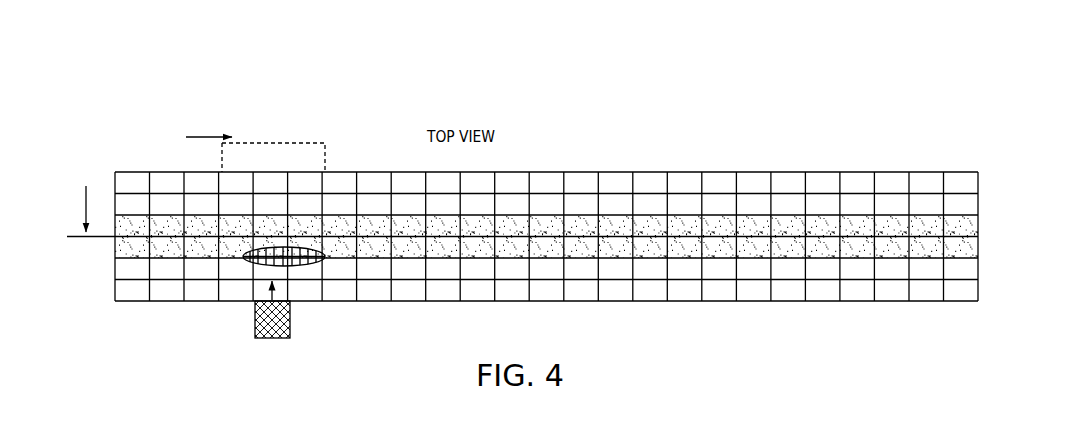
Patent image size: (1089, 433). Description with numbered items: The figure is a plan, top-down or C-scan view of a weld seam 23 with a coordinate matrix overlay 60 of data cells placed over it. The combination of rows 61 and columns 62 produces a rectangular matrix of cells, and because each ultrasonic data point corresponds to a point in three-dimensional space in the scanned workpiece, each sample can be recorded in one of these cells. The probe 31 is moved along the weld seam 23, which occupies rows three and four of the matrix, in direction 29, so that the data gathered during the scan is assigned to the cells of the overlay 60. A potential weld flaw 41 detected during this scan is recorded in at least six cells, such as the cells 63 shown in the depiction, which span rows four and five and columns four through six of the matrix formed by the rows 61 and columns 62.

The coordinate matrix overlay 60 is at (819, 101).
The columns 62 is at (110, 155).
The rows 61 is at (124, 313).
The weld seam 23 is at (1003, 221).
The direction 29 is at (1031, 246).
The cells 63 is at (327, 267).
The probe 31 is at (302, 334).
The potential weld flaw 41 is at (239, 269).